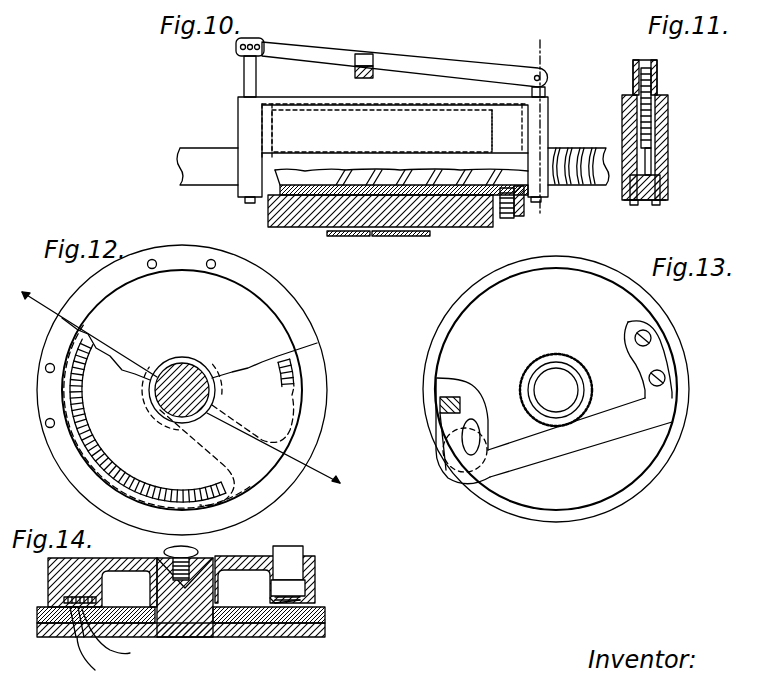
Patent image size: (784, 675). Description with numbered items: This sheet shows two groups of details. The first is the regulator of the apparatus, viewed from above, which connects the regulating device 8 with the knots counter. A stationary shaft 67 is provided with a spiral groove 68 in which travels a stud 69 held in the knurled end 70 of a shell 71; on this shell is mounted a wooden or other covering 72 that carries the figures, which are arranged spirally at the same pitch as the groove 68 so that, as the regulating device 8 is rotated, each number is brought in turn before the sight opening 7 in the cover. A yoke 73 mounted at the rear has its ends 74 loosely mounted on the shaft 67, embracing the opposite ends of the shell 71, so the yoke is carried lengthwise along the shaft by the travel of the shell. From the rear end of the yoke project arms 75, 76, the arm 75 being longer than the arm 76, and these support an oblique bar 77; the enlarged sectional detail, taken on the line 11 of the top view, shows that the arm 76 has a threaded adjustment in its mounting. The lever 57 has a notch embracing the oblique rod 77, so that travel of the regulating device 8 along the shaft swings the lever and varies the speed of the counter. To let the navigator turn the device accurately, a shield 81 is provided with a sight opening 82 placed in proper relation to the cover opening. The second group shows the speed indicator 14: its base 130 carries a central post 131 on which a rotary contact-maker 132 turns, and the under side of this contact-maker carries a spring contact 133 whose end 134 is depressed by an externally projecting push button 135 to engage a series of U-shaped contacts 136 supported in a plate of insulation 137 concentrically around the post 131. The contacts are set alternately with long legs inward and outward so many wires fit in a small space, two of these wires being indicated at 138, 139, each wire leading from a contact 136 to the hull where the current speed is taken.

In FIG. 10, the oblique bar 77 is at (315, 50).
In FIG. 10, the lever 57 is at (370, 62).
In FIG. 10, the arm 76 is at (545, 72).
In FIG. 11, the arm 76 is at (660, 70).
In FIG. 10, the sight opening 11 is at (532, 224).
In FIG. 10, the arm 75 is at (243, 78).
In FIG. 10, the yoke ends 74 is at (238, 134).
In FIG. 10, the yoke 73 is at (395, 132).
In FIG. 10, the spiral groove 68 is at (575, 148).
In FIG. 10, the stationary shaft 67 is at (588, 176).
In FIG. 10, the shell 71 is at (305, 195).
In FIG. 10, the covering 72 is at (268, 214).
In FIG. 10, the sight opening 82 is at (375, 237).
In FIG. 10, the shield 81 is at (414, 237).
In FIG. 10, the regulating device 8 is at (465, 226).
In FIG. 10, the stud 69 is at (505, 219).
In FIG. 10, the knurled end 70 is at (521, 217).
In FIG. 11, the sight opening 7 is at (652, 157).
In FIG. 12, the base 130 is at (300, 322).
In FIG. 14, the base 130 is at (325, 630).
In FIG. 12, the central post 131 is at (184, 358).
In FIG. 13, the central post 131 is at (556, 390).
In FIG. 14, the central post 131 is at (186, 600).
In FIG. 12, the contacts 136 is at (92, 480).
In FIG. 14, the contacts 136 is at (66, 600).
In FIG. 12, the speed indicator 14 is at (180, 397).
In FIG. 13, the rotary contact-maker 132 is at (688, 375).
In FIG. 14, the rotary contact-maker 132 is at (316, 563).
In FIG. 13, the spring contact 133 is at (582, 444).
In FIG. 14, the spring contact 133 is at (290, 605).
In FIG. 13, the spring contact end 134 is at (440, 407).
In FIG. 13, the push button 135 is at (446, 468).
In FIG. 14, the push button 135 is at (292, 546).
In FIG. 14, the plate of insulation 137 is at (325, 607).
In FIG. 14, the wire 138 is at (78, 652).
In FIG. 14, the wire 139 is at (132, 653).